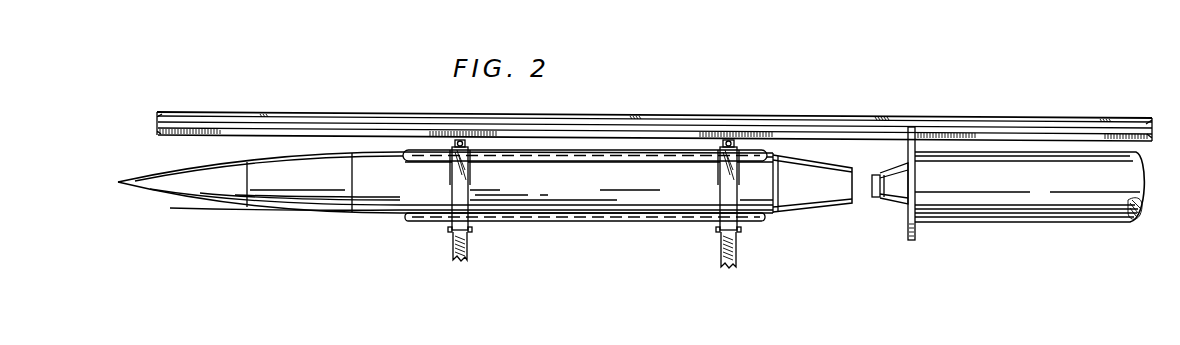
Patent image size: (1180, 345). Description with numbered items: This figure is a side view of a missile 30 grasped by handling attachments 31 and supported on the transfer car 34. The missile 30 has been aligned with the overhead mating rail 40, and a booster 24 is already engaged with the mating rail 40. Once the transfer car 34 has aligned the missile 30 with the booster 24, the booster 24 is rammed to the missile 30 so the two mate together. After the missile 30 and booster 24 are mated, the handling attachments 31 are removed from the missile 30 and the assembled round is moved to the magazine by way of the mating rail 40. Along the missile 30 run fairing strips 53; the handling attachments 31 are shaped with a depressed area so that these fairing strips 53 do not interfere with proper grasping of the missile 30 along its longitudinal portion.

The mating rail 40 is at (725, 114).
The missile 30 is at (601, 194).
The fairing strips 53 is at (428, 162).
The handling attachments 31 is at (468, 191).
The transfer car 34 is at (453, 254).
The booster 24 is at (1050, 190).